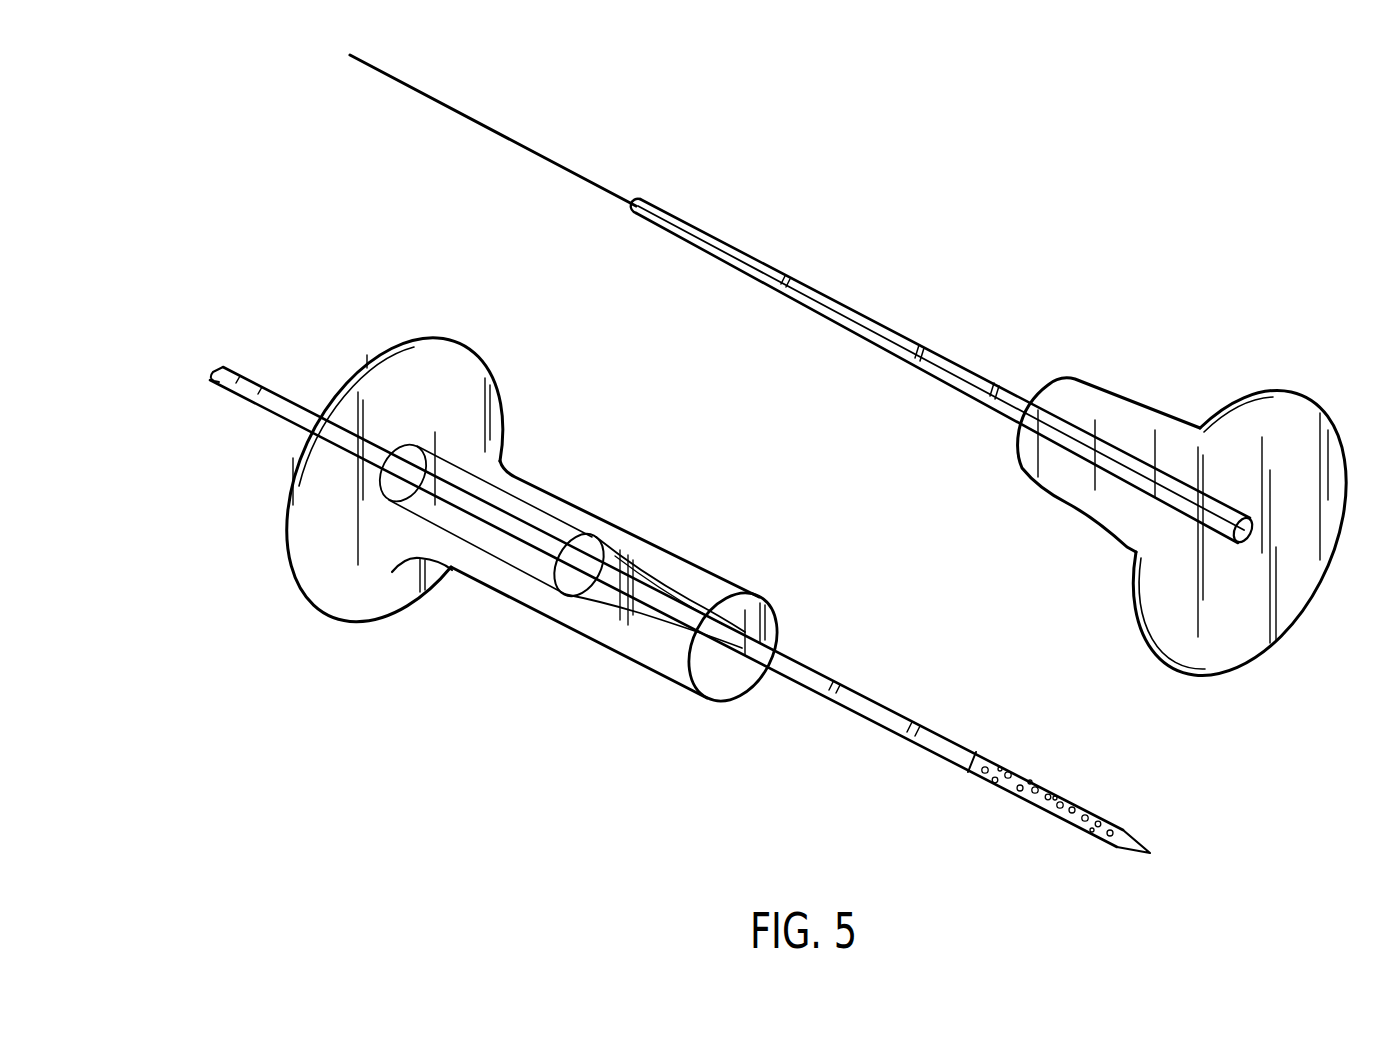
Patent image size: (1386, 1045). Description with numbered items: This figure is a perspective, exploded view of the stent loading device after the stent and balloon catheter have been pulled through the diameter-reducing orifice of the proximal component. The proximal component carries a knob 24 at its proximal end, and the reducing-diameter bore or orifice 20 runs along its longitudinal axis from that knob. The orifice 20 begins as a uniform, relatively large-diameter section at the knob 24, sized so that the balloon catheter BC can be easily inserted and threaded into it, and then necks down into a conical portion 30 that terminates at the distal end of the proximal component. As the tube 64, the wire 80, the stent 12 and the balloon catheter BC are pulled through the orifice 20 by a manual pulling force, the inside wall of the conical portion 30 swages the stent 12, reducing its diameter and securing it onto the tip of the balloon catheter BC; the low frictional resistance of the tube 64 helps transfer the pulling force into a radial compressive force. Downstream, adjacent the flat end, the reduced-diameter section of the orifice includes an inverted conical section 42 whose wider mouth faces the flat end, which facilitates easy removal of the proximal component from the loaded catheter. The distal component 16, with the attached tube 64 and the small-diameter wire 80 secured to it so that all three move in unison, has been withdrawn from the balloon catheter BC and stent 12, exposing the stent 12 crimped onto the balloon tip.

The balloon catheter BC is at (870, 697).
The stent 12 is at (1027, 800).
The distal component 16 is at (1130, 407).
The reducing-diameter bore or orifice 20 is at (492, 553).
The knob 24 is at (333, 580).
The conical portion 30 is at (600, 603).
The inverted conical section 42 is at (768, 610).
The tube 64 is at (728, 245).
The wire 80 is at (512, 138).